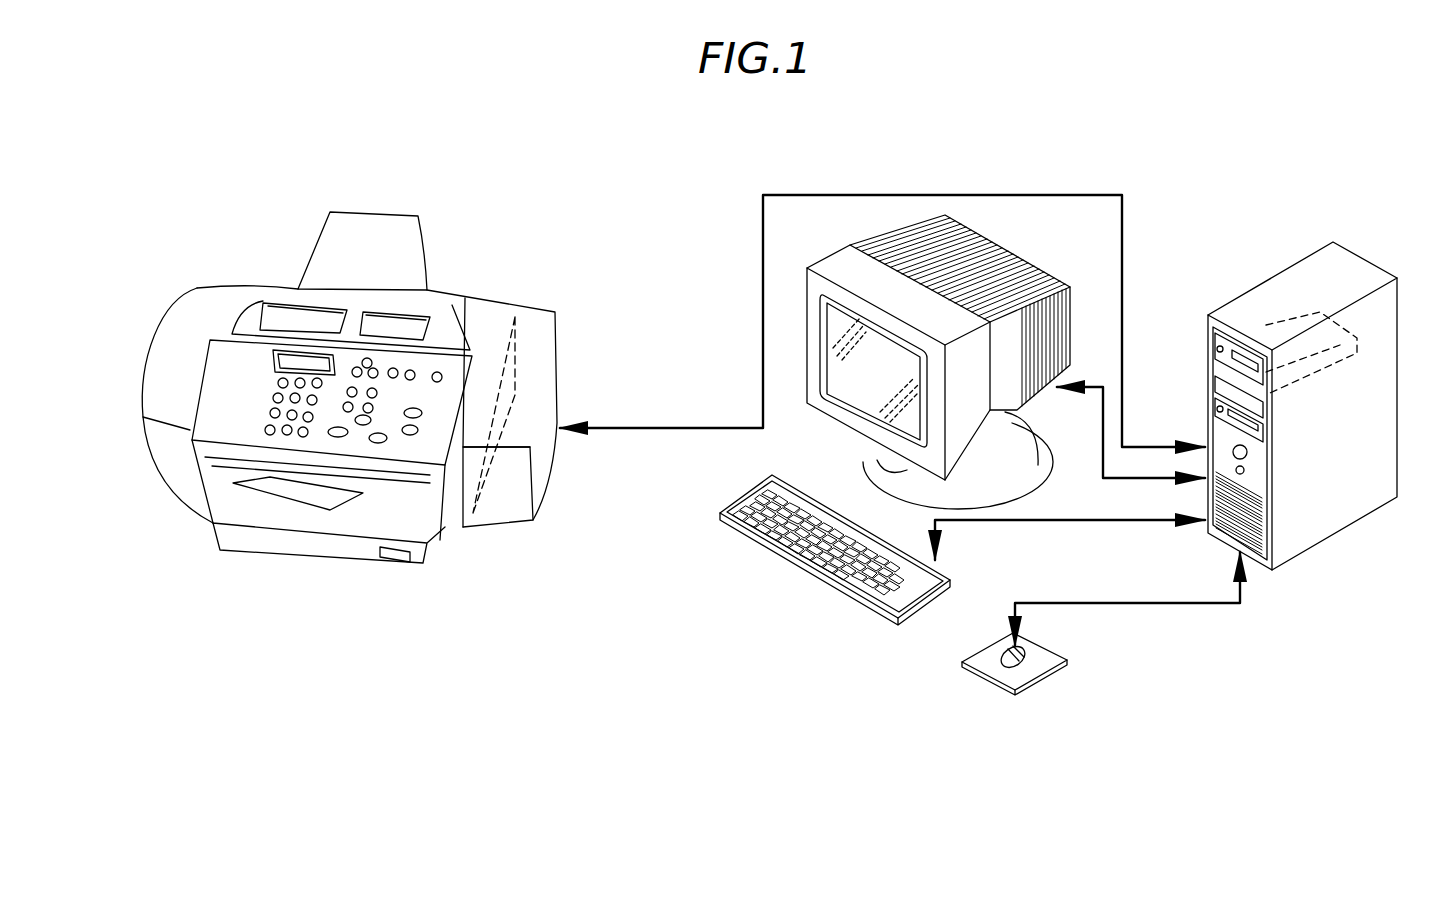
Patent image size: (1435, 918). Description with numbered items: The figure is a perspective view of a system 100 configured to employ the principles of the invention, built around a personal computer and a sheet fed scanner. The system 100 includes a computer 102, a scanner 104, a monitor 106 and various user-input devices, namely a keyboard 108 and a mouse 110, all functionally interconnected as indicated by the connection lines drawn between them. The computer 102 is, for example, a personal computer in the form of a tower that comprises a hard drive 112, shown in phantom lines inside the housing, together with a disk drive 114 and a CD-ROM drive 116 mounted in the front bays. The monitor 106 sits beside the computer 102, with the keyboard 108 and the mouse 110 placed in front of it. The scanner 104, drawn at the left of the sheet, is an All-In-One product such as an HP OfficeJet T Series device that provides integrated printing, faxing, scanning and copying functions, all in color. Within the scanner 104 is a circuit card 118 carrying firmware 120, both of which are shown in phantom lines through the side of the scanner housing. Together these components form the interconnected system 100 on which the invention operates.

The system 100 is at (613, 585).
The computer 102 is at (1233, 280).
The scanner 104 is at (277, 267).
The monitor 106 is at (837, 428).
The keyboard 108 is at (813, 575).
The mouse 110 is at (1003, 657).
The hard drive 112 is at (1228, 382).
The disk drive 114 is at (1228, 410).
The CD-ROM drive 116 is at (1228, 345).
The circuit card 118 is at (503, 435).
The firmware 120 is at (510, 365).